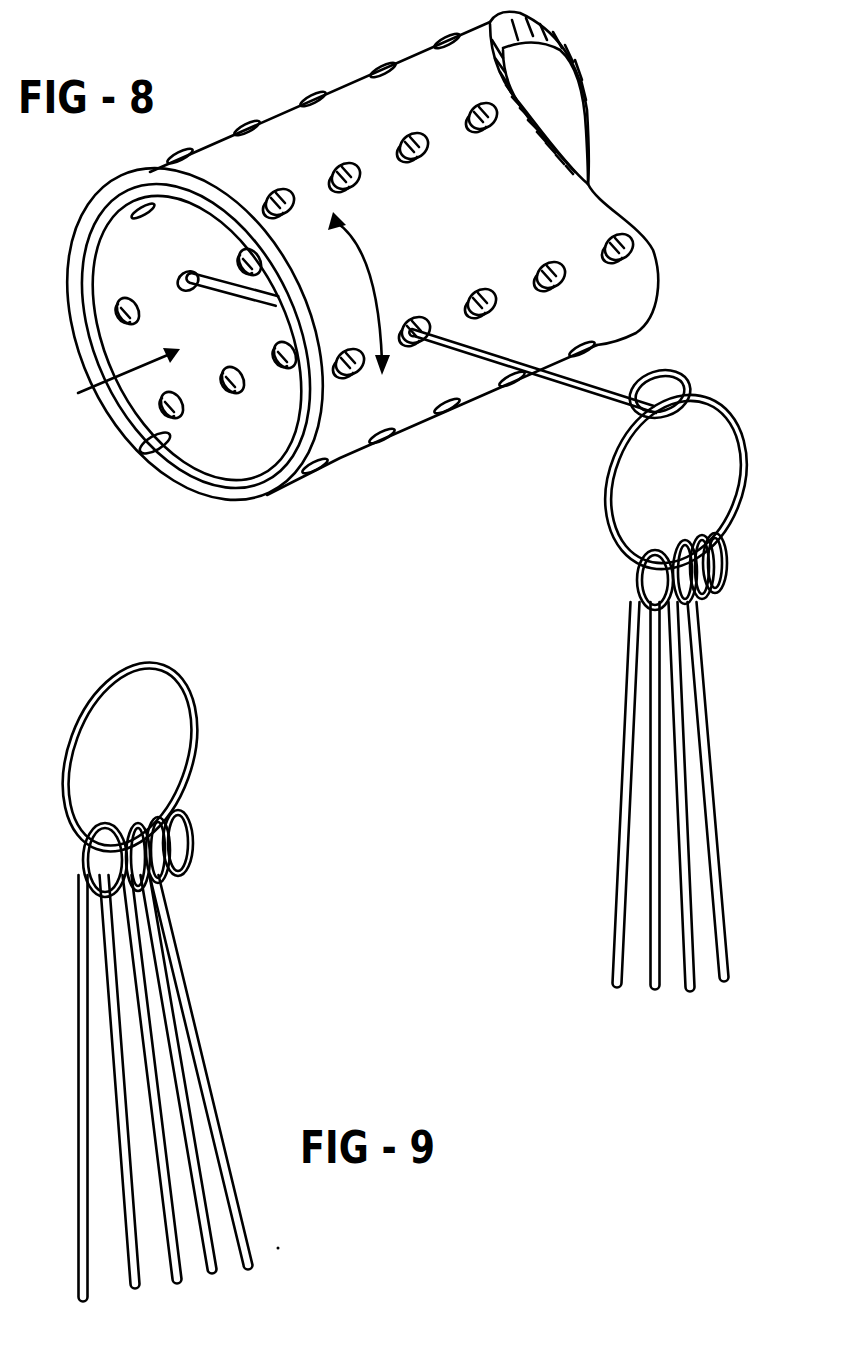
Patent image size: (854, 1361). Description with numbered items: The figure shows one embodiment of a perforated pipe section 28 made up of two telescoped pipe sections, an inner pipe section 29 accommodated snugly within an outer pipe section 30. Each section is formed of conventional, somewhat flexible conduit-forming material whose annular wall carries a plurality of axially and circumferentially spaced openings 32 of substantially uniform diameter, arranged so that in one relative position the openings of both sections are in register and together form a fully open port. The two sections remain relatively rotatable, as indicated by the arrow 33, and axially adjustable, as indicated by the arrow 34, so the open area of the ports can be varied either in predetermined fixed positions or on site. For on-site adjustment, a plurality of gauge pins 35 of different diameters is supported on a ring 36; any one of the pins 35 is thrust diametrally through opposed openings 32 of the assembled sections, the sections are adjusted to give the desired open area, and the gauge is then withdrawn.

In FIG. 8, the perforated pipe section 28 is at (402, 38).
In FIG. 8, the inner pipe section 29 is at (147, 447).
In FIG. 8, the outer pipe section 30 is at (246, 503).
In FIG. 8, the openings 32 is at (180, 291).
In FIG. 8, the arrow 33 is at (362, 266).
In FIG. 8, the arrow 34 is at (88, 390).
In FIG. 8, the gauge pins 35 is at (566, 396).
In FIG. 9, the gauge pins 35 is at (148, 1008).
In FIG. 8, the ring 36 is at (742, 430).
In FIG. 9, the ring 36 is at (205, 738).